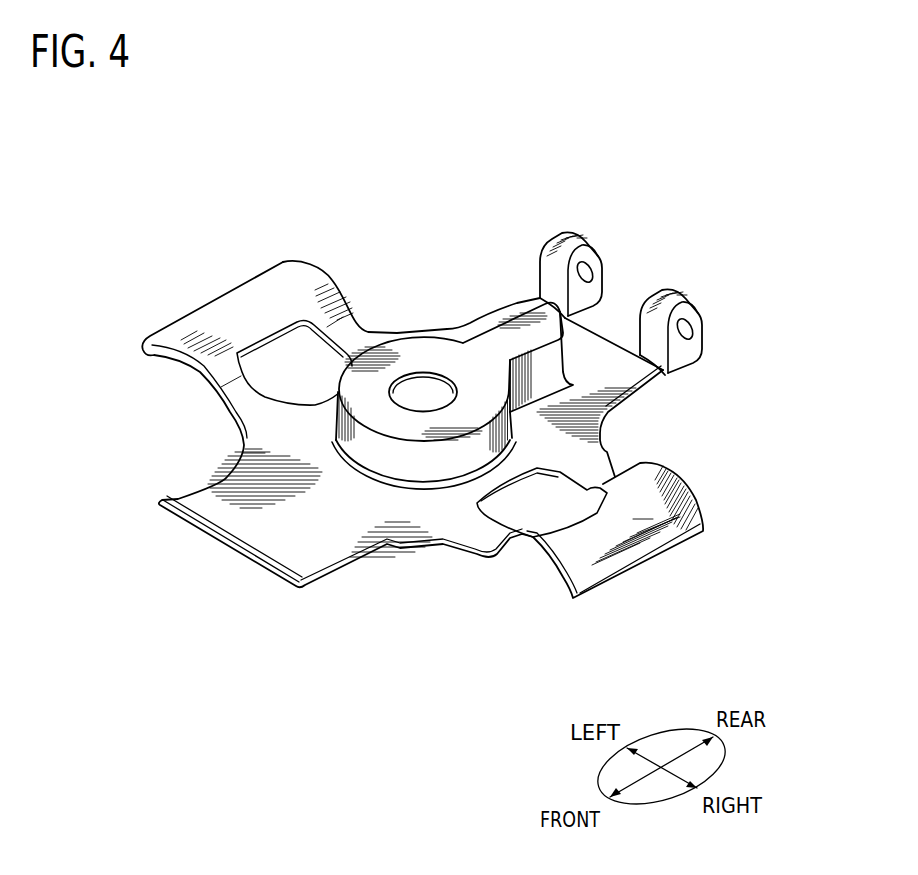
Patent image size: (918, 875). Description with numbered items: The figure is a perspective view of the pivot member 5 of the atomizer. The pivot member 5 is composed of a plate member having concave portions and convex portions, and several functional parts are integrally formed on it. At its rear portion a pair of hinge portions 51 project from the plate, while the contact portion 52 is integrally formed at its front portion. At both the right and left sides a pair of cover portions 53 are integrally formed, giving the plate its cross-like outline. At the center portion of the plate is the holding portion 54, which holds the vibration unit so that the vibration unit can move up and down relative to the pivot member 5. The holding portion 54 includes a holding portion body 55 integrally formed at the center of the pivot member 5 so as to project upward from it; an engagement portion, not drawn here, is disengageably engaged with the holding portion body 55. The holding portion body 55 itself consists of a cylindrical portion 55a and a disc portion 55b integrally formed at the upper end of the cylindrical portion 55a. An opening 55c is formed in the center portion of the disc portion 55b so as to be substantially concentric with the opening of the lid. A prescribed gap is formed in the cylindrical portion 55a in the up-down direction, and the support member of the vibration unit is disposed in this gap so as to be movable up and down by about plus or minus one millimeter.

The pivot member 5 is at (320, 235).
The hinge portions 51 is at (668, 297).
The contact portion 52 is at (237, 491).
The cover portions 53 is at (239, 310).
The holding portion 54 is at (370, 330).
The holding portion body 55 is at (487, 640).
The cylindrical portion 55a is at (410, 463).
The disc portion 55b is at (397, 423).
The opening 55c is at (424, 372).